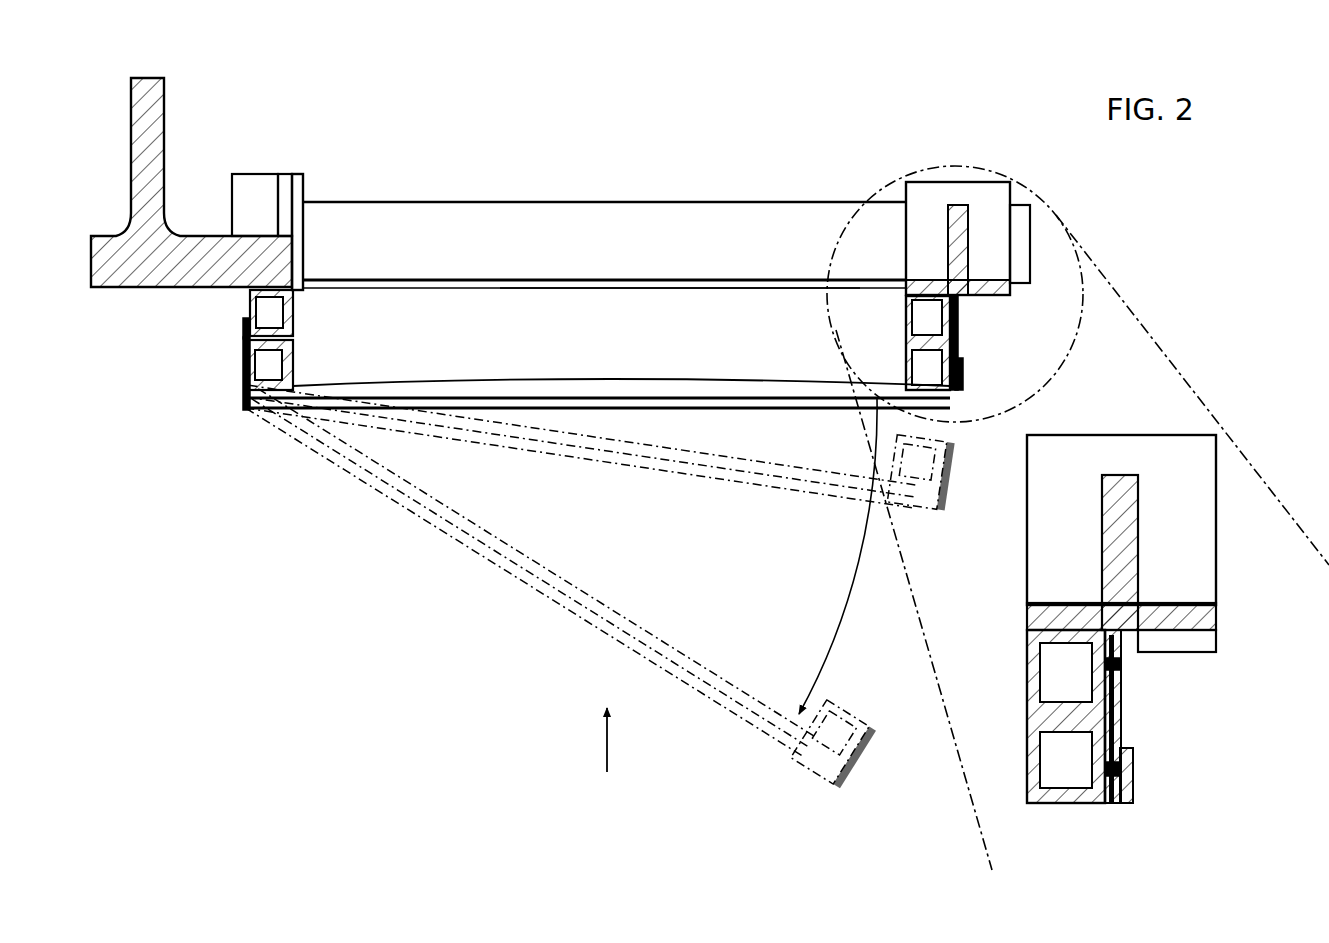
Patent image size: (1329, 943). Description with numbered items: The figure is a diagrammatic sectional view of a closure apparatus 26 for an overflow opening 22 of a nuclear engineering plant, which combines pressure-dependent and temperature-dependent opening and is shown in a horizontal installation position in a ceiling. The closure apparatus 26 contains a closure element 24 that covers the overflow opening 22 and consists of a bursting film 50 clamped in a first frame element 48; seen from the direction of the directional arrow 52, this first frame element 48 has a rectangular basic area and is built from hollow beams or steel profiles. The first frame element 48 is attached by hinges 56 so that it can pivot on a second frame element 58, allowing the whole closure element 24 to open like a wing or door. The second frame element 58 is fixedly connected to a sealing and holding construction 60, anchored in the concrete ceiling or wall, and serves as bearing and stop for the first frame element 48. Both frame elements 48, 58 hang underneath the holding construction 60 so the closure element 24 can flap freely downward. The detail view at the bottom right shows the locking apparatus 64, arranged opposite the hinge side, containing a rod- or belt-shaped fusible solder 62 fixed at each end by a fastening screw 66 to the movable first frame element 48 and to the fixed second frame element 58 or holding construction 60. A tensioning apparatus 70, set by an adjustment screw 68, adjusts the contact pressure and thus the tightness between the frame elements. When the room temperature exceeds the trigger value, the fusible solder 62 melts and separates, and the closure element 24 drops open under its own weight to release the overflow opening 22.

The overflow opening 22 is at (640, 302).
The closure element 24 is at (730, 378).
The closure apparatus 26 is at (508, 170).
The first frame element 48 is at (294, 360).
The bursting film 50 is at (605, 385).
The directional arrow 52 is at (605, 746).
The hinges 56 is at (243, 338).
The second frame element 58 is at (294, 312).
The sealing and holding construction 60 is at (202, 235).
The fusible solder 62 is at (1121, 720).
The locking apparatus 64 is at (1168, 742).
The fastening screw 66 is at (1122, 664).
The adjustment screw 68 is at (1115, 806).
The tensioning apparatus 70 is at (1134, 792).